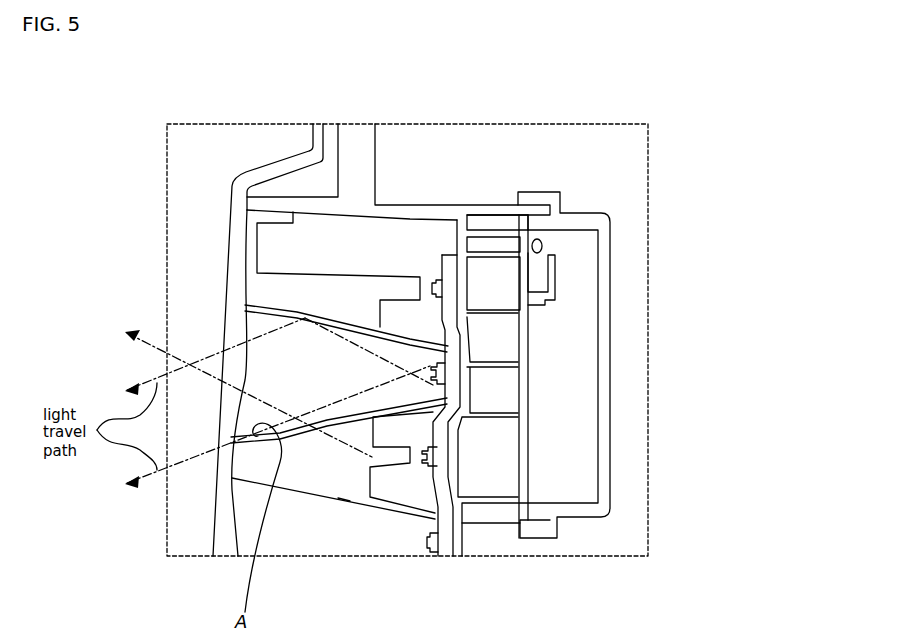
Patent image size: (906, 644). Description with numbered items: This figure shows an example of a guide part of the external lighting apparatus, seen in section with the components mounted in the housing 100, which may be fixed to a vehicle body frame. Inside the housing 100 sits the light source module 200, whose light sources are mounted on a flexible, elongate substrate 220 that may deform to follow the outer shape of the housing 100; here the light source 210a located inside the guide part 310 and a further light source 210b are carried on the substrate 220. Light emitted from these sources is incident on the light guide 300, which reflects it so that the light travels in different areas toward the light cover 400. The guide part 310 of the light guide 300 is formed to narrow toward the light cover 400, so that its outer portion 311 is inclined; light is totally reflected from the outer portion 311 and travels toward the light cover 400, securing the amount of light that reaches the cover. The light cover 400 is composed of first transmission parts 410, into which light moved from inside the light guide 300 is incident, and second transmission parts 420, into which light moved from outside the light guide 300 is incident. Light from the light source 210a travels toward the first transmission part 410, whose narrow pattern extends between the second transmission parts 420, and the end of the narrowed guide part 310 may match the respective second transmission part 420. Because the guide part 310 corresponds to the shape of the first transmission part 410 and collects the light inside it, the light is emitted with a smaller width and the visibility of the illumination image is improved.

The housing 100 is at (460, 205).
The light source module 200 is at (803, 353).
The light source 210a is at (419, 466).
The light source 210b is at (429, 381).
The substrate 220 is at (455, 353).
The light guide 300 is at (377, 516).
The guide part 310 is at (317, 467).
The outer portion 311 is at (342, 493).
The light cover 400 is at (228, 258).
The first transmission part 410 is at (232, 445).
The second transmission part 420 is at (237, 365).